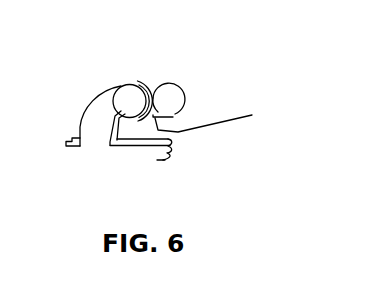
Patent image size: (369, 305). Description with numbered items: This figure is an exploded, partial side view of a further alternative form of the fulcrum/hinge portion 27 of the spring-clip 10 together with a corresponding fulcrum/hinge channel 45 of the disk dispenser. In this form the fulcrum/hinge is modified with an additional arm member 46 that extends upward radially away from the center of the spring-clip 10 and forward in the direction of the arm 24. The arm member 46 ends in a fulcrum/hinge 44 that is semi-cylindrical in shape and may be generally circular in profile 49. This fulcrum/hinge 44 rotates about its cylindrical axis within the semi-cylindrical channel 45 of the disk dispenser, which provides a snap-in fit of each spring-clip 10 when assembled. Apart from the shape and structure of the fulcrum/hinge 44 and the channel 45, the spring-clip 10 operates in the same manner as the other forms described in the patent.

The spring-clip 10 is at (107, 160).
The arm 24 is at (163, 160).
The fulcrum/hinge portion 27 is at (129, 101).
The fulcrum/hinge 44 is at (156, 96).
The fulcrum/hinge channel 45 is at (183, 95).
The arm member 46 is at (100, 123).
The circular profile 49 is at (128, 84).